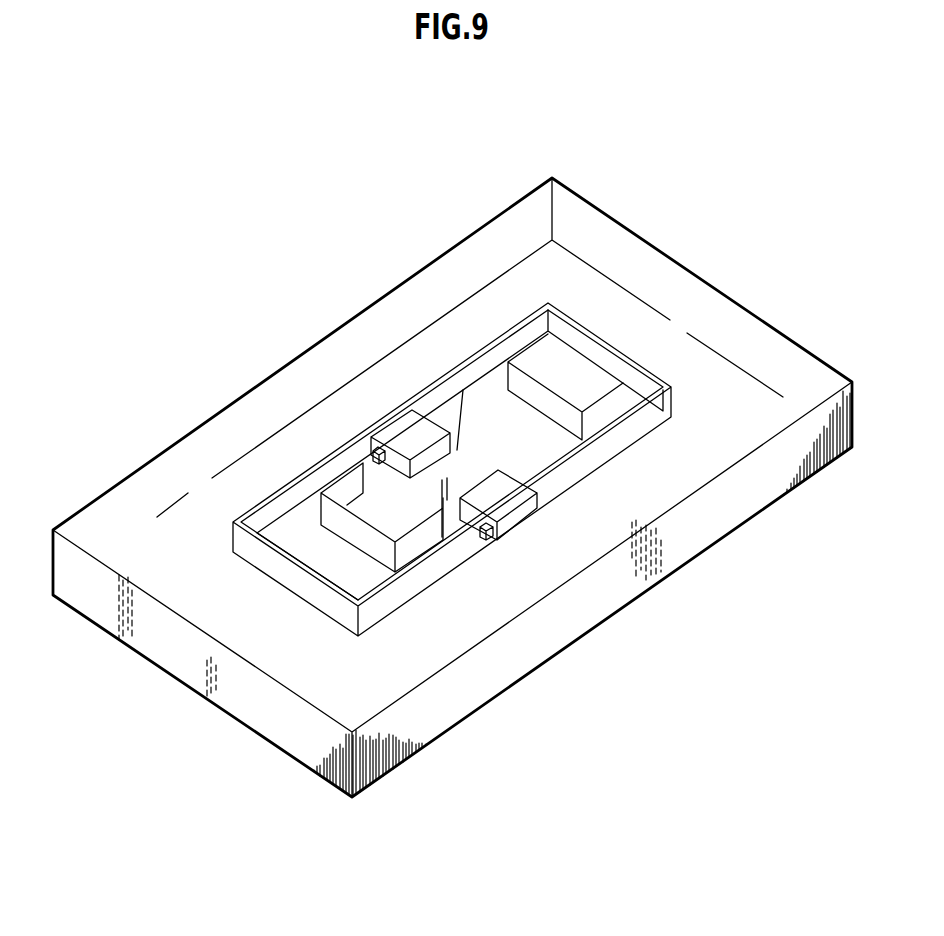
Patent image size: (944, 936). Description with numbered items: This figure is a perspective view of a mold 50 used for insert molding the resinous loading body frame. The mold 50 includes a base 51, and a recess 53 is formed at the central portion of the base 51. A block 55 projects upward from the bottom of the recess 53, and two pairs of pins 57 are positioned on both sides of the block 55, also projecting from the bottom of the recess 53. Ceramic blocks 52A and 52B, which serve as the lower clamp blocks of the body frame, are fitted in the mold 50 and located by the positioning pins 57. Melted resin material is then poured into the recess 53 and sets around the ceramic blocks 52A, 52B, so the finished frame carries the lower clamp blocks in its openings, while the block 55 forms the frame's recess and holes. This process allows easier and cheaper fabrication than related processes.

The mold 50 is at (659, 206).
The base 51 is at (697, 333).
The recess 53 is at (533, 348).
The block 55 is at (493, 387).
The ceramic block 52A is at (394, 429).
The ceramic block 52B is at (495, 497).
The pins 57 is at (430, 420).